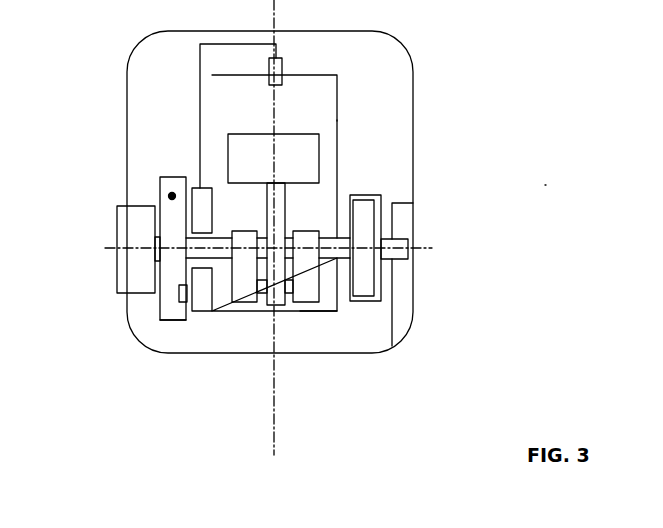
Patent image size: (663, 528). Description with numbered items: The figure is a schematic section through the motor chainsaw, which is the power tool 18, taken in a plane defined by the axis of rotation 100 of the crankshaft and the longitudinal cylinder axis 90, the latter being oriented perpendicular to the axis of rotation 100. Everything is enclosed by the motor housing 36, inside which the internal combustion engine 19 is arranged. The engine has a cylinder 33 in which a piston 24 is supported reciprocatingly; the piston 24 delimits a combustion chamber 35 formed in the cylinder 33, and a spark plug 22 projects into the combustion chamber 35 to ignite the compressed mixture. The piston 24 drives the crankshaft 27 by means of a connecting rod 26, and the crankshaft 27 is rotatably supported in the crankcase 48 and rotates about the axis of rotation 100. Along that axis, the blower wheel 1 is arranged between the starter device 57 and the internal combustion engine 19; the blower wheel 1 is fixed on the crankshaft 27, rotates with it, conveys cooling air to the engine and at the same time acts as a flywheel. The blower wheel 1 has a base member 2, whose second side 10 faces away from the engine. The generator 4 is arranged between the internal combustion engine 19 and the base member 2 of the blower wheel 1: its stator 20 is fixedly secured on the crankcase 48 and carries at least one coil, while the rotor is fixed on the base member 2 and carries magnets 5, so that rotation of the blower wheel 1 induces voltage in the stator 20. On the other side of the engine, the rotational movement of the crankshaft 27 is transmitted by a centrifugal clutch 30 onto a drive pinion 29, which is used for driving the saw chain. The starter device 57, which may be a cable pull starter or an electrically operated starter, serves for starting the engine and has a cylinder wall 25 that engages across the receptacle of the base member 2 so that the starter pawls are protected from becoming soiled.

The blower wheel 1 is at (173, 202).
The base member 2 is at (172, 196).
The generator 4 is at (183, 338).
The magnet 5 is at (183, 297).
The second side 10 is at (157, 302).
The power tool 18 is at (545, 185).
The internal combustion engine 19 is at (232, 323).
The stator 20 is at (193, 303).
The spark plug 22 is at (282, 73).
The piston 24 is at (308, 160).
The cylinder wall 25 is at (200, 96).
The connecting rod 26 is at (272, 281).
The crankshaft 27 is at (327, 257).
The drive pinion 29 is at (398, 255).
The centrifugal clutch 30 is at (372, 305).
The cylinder 33 is at (337, 120).
The combustion chamber 35 is at (308, 113).
The motor housing 36 is at (407, 50).
The crankcase 48 is at (333, 312).
The starter device 57 is at (127, 274).
The longitudinal cylinder axis 90 is at (273, 420).
The axis of rotation 100 is at (100, 248).